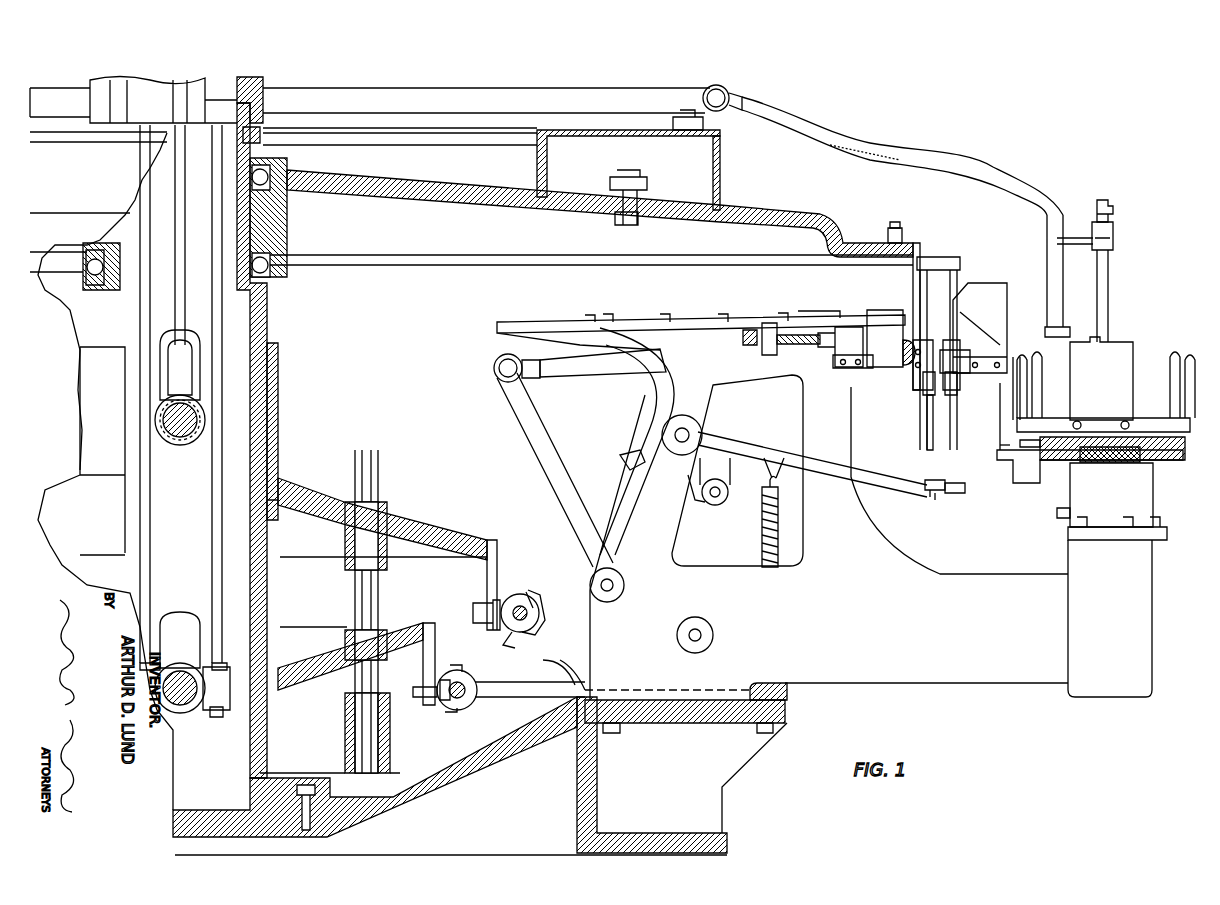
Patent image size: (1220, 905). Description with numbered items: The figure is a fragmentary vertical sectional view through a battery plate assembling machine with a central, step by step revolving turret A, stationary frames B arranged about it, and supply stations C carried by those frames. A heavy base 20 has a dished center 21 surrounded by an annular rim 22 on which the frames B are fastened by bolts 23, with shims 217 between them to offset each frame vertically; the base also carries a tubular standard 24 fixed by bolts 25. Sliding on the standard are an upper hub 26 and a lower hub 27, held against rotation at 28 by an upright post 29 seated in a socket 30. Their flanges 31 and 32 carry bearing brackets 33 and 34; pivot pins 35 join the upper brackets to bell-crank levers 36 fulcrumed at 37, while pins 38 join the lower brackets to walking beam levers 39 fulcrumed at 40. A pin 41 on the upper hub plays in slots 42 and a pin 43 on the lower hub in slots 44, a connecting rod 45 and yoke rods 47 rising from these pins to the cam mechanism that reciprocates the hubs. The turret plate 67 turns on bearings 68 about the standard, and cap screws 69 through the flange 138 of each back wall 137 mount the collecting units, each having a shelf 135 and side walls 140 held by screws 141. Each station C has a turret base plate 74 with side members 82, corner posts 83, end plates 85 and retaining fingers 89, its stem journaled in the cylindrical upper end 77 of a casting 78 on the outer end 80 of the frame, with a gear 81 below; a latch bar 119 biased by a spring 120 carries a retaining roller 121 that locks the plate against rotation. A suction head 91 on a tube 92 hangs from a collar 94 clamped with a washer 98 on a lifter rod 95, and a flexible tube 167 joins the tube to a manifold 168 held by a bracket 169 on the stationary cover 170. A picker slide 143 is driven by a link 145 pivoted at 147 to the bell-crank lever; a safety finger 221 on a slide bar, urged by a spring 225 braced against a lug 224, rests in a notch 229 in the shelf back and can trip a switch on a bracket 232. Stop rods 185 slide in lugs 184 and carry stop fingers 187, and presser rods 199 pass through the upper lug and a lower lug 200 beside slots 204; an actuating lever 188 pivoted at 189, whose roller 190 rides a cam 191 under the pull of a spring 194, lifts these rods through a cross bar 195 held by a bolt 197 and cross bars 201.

The base 20 is at (600, 785).
The dished center 21 is at (432, 805).
The annular rim 22 is at (690, 723).
The bolts 23 is at (612, 733).
The tubular standard 24 is at (268, 330).
The bolts 25 is at (315, 785).
The upper hub 26 is at (322, 488).
The lower hub 27 is at (300, 640).
The slidable fit 28 is at (388, 510).
The upright post 29 is at (380, 455).
The socket 30 is at (393, 740).
The peripheral flange 31 is at (487, 575).
The peripheral flange 32 is at (423, 658).
The bearing brackets 33 is at (504, 644).
The bearing brackets 34 is at (450, 715).
The pivot pins 35 is at (528, 592).
The bell-crank levers 36 is at (560, 590).
The fulcrum 37 is at (625, 572).
The pins 38 is at (477, 672).
The walking beam levers 39 is at (520, 712).
The fulcrum 40 is at (702, 637).
The pin 41 is at (172, 432).
The vertical slots 42 is at (200, 385).
The pin 43 is at (178, 672).
The slots 44 is at (195, 612).
The connecting rod 45 is at (175, 325).
The rods 47 is at (150, 545).
The turret plate 67 is at (787, 205).
The bearings 68 is at (287, 205).
The cap screws 69 is at (896, 222).
The turret base plate 74 is at (1150, 418).
The cylindrical upper end 77 is at (1070, 480).
The casting 78 is at (1155, 512).
The outer end of frame 80 is at (1152, 590).
The gear 81 is at (1057, 513).
The side members 82 is at (1101, 383).
The corner posts 83 is at (1180, 355).
The end plates 85 is at (1042, 370).
The retaining fingers 89 is at (1008, 405).
The suction head 91 is at (1045, 330).
The tube 92 is at (1047, 228).
The collar 94 is at (1113, 240).
The lifter rod 95 is at (1108, 287).
The washer 98 is at (1113, 210).
The latch bar 119 is at (1010, 460).
The retractile coil spring 120 is at (1132, 465).
The retaining roller 121 is at (1018, 441).
The shelf 135 is at (922, 392).
The back wall 137 is at (910, 280).
The inwardly turned flange 138 is at (885, 232).
The side walls 140 is at (975, 310).
The screws 141 is at (970, 373).
The slide 143 is at (557, 322).
The link 145 is at (590, 380).
The pivot 147 is at (500, 380).
The flexible tube 167 is at (905, 132).
The suction manifold 168 is at (730, 90).
The bracket 169 is at (720, 140).
The stationary cover 170 is at (600, 135).
The apertured lugs 184 is at (945, 245).
The stop rods 185 is at (922, 440).
The stop fingers 187 is at (912, 378).
The actuating lever 188 is at (878, 502).
The pivot 189 is at (690, 433).
The follower roller 190 is at (728, 500).
The cam member 191 is at (625, 452).
The spring 194 is at (762, 548).
The cross bar 195 is at (935, 478).
The bolt 197 is at (935, 500).
The presser rods 199 is at (962, 268).
The lower lug 200 is at (958, 390).
The cross bars 201 is at (955, 481).
The vertical slots 204 is at (1000, 320).
The shims 217 is at (787, 700).
The finger 221 is at (830, 350).
The lug 224 is at (755, 350).
The expansion coil spring 225 is at (795, 344).
The notch 229 is at (912, 315).
The bracket 232 is at (885, 338).
The turret A is at (478, 185).
The stationary frames B is at (922, 690).
The supply stations C is at (1151, 349).